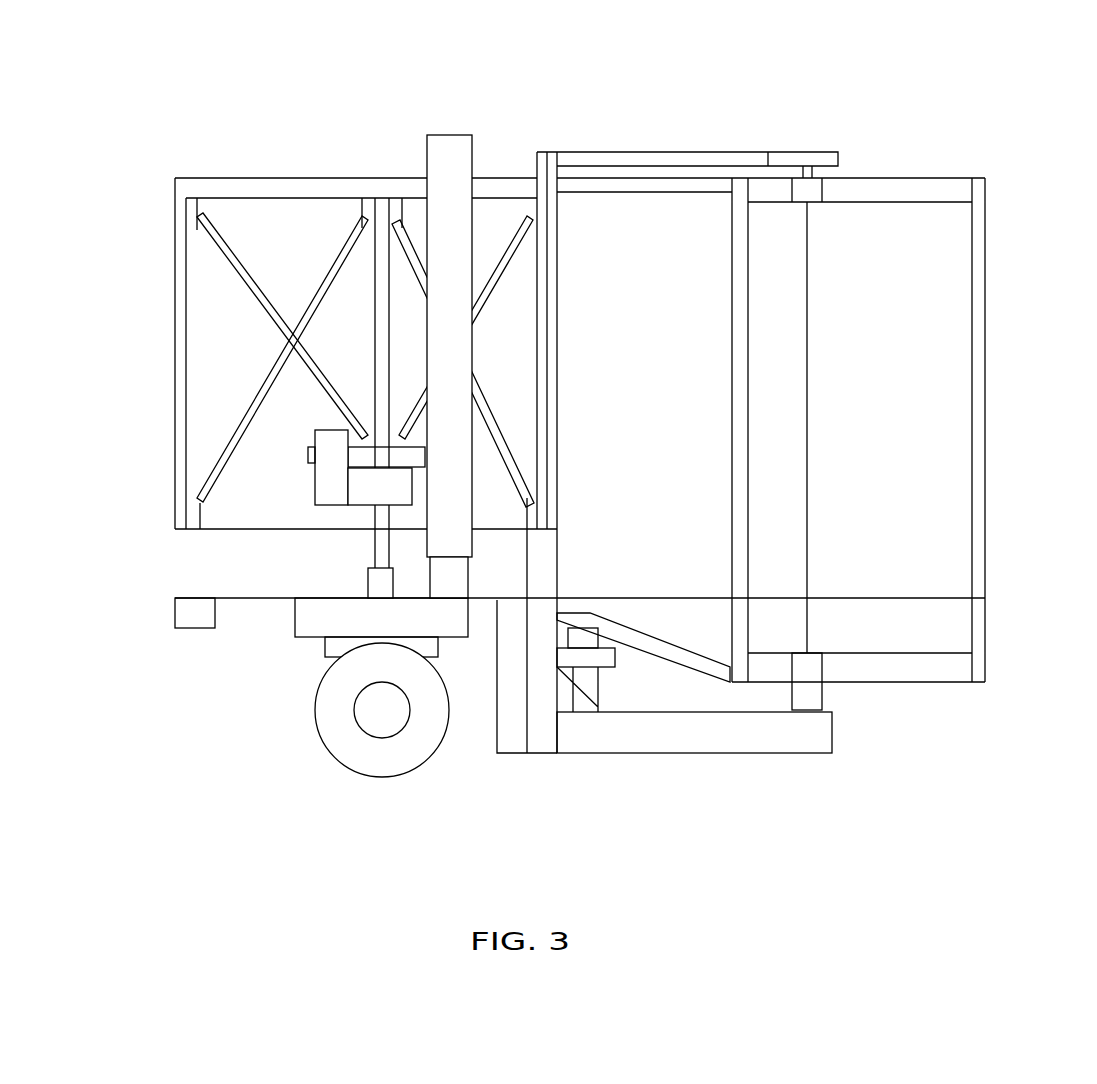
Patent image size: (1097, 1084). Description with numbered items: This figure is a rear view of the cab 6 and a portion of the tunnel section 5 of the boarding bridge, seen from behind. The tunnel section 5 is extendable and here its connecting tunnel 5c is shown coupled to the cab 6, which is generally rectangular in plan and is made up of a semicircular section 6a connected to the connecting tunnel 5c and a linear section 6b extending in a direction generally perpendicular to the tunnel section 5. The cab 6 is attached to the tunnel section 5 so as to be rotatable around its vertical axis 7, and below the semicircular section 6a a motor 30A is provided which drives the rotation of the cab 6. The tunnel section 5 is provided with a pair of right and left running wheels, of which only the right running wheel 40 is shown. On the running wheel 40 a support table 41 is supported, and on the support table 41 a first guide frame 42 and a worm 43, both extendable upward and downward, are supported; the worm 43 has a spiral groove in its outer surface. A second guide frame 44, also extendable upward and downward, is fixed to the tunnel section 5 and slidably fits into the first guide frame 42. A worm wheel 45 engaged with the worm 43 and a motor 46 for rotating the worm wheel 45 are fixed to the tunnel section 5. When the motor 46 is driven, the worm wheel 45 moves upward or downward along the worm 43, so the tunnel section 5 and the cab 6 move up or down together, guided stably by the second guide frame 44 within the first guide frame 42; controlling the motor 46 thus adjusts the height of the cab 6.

The tunnel section 5 is at (580, 420).
The connecting tunnel 5c is at (285, 178).
The cab 6 is at (762, 435).
The semicircular section 6a is at (648, 175).
The linear section 6b is at (878, 177).
The vertical axis 7 is at (822, 698).
The motor 30A is at (600, 687).
The running wheel 40 is at (320, 735).
The support table 41 is at (295, 618).
The first guide frame 42 is at (455, 580).
The worm 43 is at (375, 349).
The second guide frame 44 is at (452, 352).
The worm wheel 45 is at (367, 495).
The motor 46 is at (322, 485).